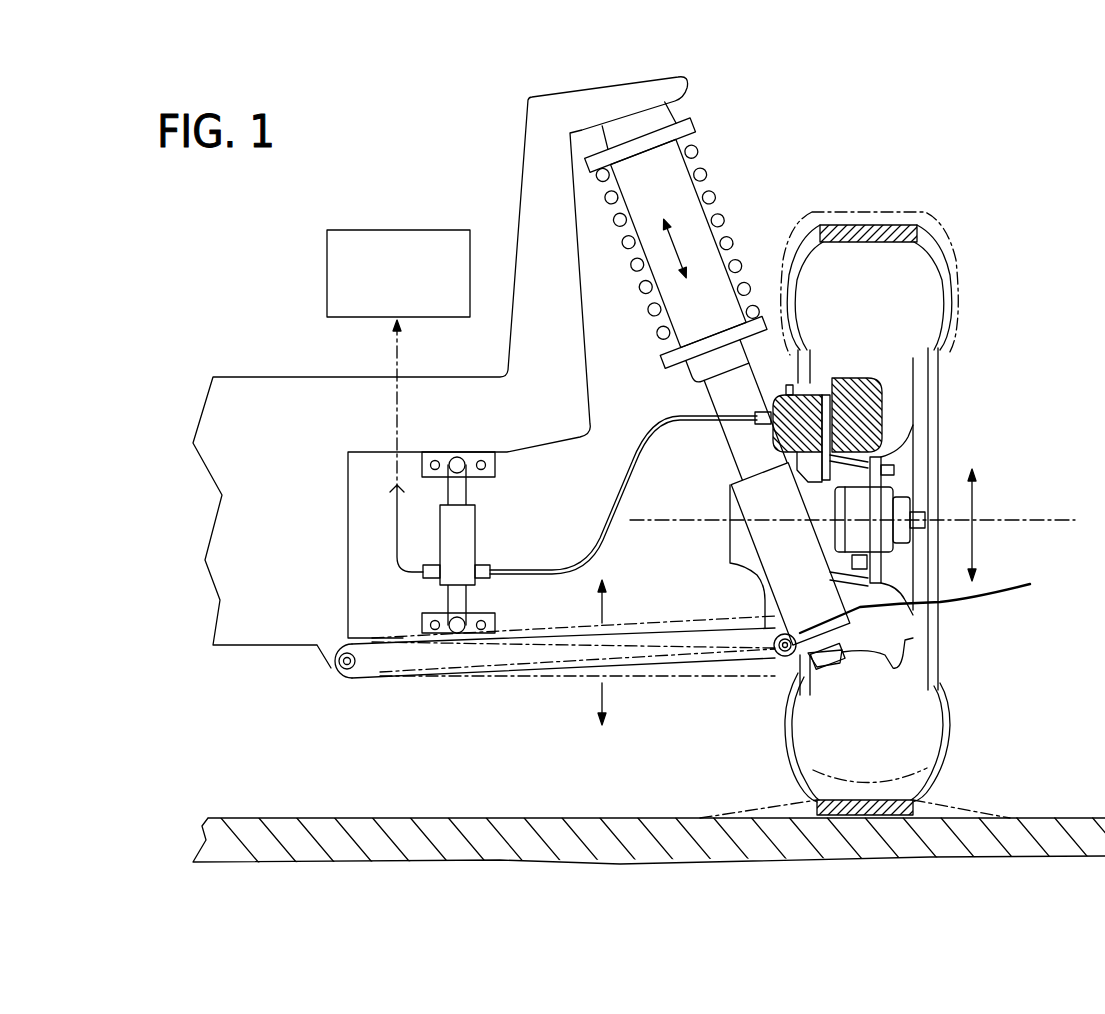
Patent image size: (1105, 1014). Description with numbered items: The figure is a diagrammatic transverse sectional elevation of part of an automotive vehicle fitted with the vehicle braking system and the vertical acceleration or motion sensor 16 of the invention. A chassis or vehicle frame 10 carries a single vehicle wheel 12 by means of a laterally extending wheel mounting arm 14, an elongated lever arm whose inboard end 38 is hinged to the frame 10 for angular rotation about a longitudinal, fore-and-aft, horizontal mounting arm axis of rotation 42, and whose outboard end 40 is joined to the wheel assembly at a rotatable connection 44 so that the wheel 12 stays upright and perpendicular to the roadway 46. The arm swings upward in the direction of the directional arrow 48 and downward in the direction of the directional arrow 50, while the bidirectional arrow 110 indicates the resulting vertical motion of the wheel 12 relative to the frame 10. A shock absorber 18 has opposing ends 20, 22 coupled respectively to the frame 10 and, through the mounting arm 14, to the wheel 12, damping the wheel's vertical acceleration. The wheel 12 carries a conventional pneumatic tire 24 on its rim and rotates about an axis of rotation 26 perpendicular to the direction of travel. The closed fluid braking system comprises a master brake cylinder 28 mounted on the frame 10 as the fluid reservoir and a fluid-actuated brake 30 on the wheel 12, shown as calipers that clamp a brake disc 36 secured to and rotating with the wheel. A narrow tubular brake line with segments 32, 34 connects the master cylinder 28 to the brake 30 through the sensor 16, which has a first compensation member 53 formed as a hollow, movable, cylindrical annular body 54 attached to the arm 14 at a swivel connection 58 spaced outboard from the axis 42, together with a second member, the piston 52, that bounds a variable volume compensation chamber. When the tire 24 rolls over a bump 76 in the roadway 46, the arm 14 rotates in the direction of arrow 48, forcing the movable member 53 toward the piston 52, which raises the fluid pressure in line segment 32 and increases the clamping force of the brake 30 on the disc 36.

The vehicle frame 10 is at (250, 368).
The vehicle wheel 12 is at (960, 419).
The wheel mounting arm 14 is at (703, 657).
The vertical acceleration or motion sensor 16 is at (493, 524).
The shock absorber 18 is at (754, 223).
The shock absorber end 20 is at (663, 118).
The shock absorber end 22 is at (857, 668).
The pneumatic tire 24 is at (885, 214).
The axis of rotation 26 is at (690, 523).
The master brake cylinder 28 is at (402, 235).
The fluid-actuated brake 30 is at (898, 407).
The brake line segment 32 is at (633, 470).
The brake line segment 34 is at (397, 527).
The brake disc 36 is at (837, 410).
The inboard end 38 is at (373, 660).
The outboard end 40 is at (770, 652).
The mounting arm axis of rotation 42 is at (343, 661).
The rotatable connection 44 is at (934, 602).
The roadway 46 is at (543, 817).
The directional arrow 48 is at (600, 600).
The directional arrow 50 is at (598, 696).
The piston 52 is at (470, 490).
The first compensation member 53 is at (426, 586).
The hollow body 54 is at (470, 547).
The swivel connection 58 is at (457, 645).
The bump 76 is at (940, 797).
The bidirectional arrow 110 is at (972, 498).